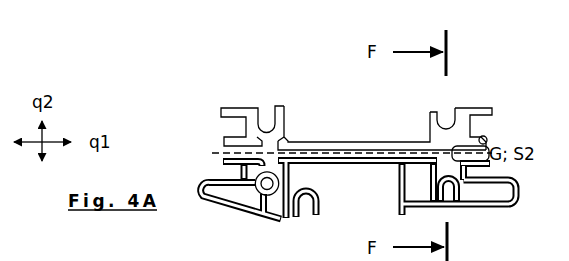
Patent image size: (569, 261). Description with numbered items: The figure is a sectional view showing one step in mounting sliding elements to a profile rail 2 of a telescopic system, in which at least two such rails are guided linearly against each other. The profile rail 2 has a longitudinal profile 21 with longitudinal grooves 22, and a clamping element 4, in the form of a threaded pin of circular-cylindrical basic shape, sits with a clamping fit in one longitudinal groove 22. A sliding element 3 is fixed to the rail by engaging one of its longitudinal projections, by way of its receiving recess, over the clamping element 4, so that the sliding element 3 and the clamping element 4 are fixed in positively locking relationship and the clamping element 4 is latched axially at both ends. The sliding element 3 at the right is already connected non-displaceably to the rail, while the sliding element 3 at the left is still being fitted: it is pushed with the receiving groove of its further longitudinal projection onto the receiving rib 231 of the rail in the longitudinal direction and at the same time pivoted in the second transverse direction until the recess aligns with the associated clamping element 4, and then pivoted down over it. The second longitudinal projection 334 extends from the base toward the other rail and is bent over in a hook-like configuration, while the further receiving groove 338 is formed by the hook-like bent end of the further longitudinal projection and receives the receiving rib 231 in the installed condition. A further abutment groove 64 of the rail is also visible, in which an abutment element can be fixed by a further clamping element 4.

The profile rail 2 is at (290, 83).
The longitudinal profile 21 is at (220, 106).
The longitudinal groove 22 is at (443, 120).
The receiving rib 231 is at (478, 108).
The further abutment groove 64 is at (485, 137).
The sliding element 3 is at (397, 190).
The clamping element 4 is at (280, 181).
The second longitudinal projection 334 is at (399, 185).
The further receiving groove 338 is at (302, 203).